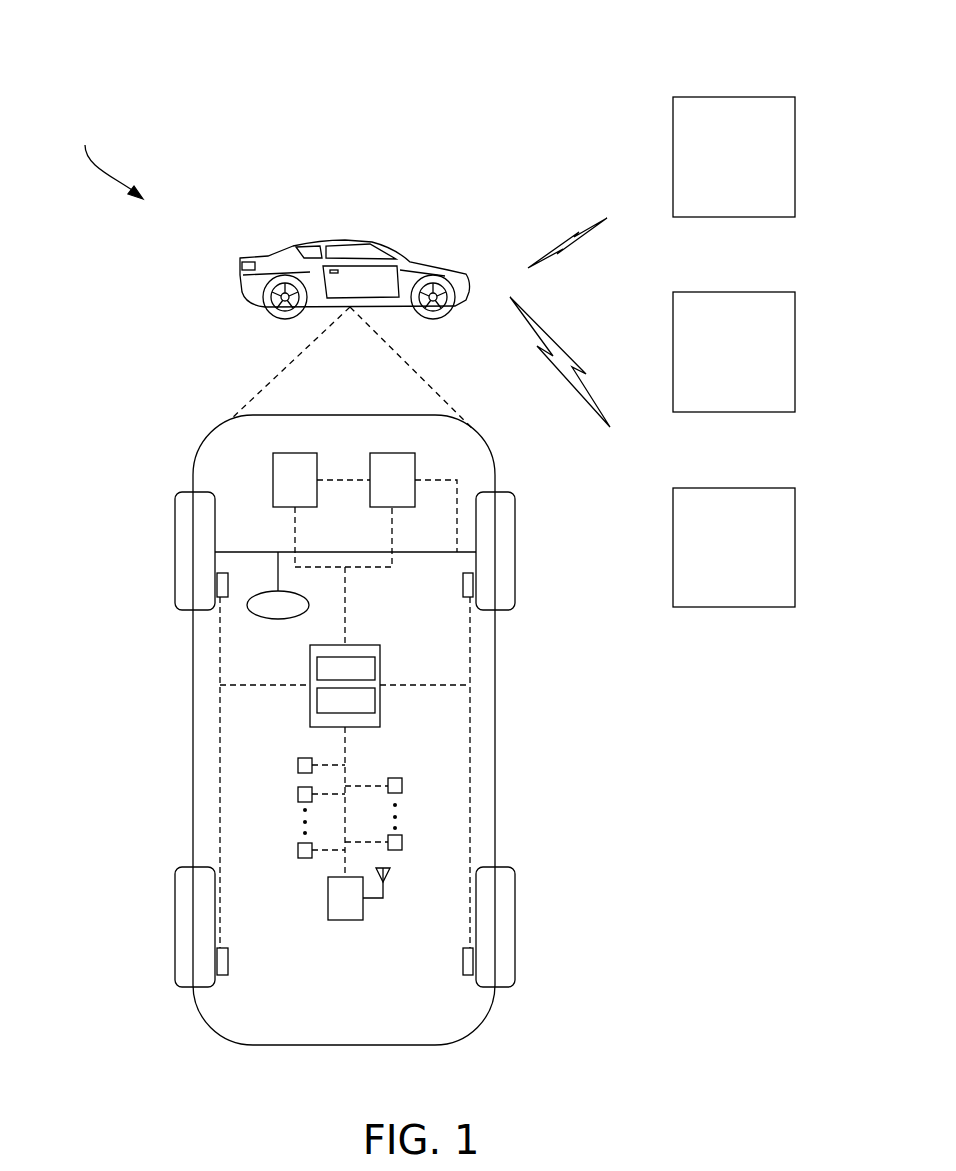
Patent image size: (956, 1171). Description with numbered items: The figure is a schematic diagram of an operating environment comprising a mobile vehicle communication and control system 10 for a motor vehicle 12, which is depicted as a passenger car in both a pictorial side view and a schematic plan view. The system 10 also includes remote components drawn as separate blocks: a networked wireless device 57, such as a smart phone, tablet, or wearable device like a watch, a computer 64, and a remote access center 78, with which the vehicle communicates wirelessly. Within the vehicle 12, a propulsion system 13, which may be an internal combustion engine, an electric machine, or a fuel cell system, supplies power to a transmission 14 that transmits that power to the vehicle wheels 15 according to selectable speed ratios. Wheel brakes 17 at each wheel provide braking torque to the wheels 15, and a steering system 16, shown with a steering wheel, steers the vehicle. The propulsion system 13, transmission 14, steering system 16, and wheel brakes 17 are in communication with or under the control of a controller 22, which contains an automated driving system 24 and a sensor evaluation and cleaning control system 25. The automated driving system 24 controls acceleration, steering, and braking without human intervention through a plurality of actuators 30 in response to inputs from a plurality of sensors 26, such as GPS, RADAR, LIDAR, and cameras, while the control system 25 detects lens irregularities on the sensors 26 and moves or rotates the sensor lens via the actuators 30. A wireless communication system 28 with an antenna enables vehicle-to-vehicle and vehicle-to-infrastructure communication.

The mobile vehicle communication and control system 10 is at (108, 159).
The motor vehicle 12 is at (238, 283).
The propulsion system 13 is at (273, 481).
The transmission 14 is at (415, 463).
The vehicle wheels 15 is at (215, 540).
The steering system 16 is at (279, 619).
The wheel brakes 17 is at (223, 597).
The controller 22 is at (380, 665).
The automated driving system 24 is at (355, 726).
The sensor evaluation and cleaning control system 25 is at (374, 657).
The sensors 26 is at (298, 762).
The wireless communication system 28 is at (343, 920).
The actuators 30 is at (402, 783).
The networked wireless device 57 is at (775, 96).
The computer 64 is at (775, 291).
The remote access center 78 is at (775, 487).